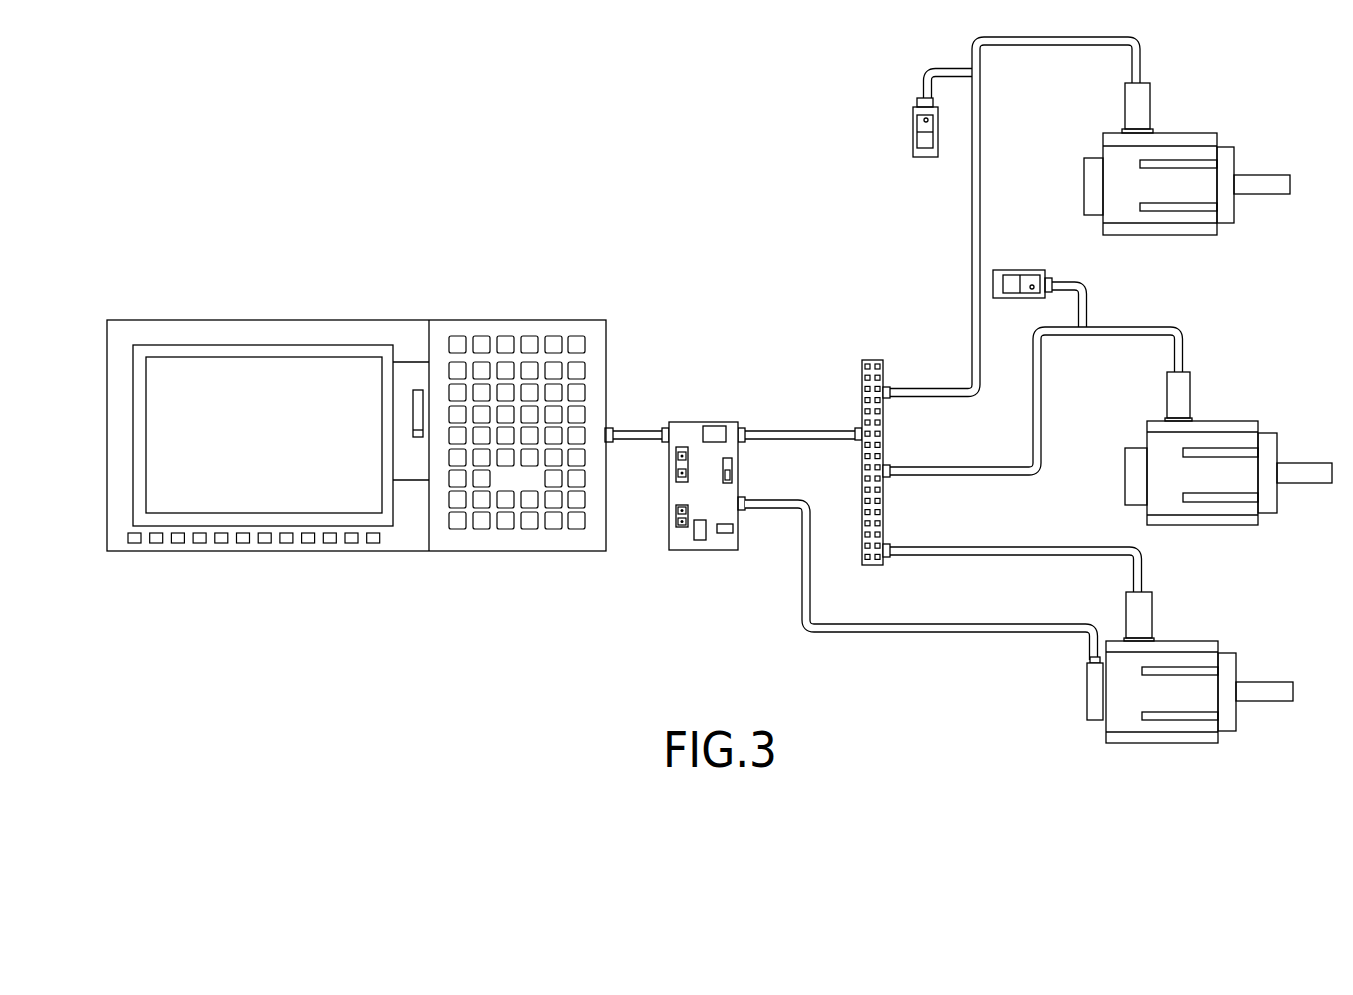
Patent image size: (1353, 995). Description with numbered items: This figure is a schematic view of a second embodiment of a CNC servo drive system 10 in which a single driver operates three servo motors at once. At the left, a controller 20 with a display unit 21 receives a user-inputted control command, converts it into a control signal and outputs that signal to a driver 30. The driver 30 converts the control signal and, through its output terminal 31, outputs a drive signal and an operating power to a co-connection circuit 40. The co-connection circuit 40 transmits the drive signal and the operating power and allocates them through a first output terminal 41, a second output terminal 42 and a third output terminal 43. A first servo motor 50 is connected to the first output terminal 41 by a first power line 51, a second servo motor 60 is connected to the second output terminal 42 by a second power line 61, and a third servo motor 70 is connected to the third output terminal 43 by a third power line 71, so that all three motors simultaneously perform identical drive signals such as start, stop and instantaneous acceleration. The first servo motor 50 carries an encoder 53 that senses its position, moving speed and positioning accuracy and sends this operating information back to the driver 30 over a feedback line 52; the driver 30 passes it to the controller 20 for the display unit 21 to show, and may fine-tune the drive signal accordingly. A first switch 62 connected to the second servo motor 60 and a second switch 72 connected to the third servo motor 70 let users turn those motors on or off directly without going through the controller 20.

The CNC servo drive system 10 is at (527, 181).
The controller 20 is at (433, 320).
The display unit 21 is at (325, 382).
The driver 30 is at (684, 416).
The output terminal 31 is at (742, 427).
The co-connection circuit 40 is at (859, 358).
The first output terminal 41 is at (887, 545).
The second output terminal 42 is at (887, 467).
The third output terminal 43 is at (887, 388).
The first servo motor 50 is at (1226, 641).
The first power line 51 is at (1140, 570).
The feedback line 52 is at (925, 628).
The encoder 53 is at (1090, 655).
The second servo motor 60 is at (1203, 407).
The second power line 61 is at (1105, 330).
The first switch 62 is at (1010, 283).
The third servo motor 70 is at (1163, 115).
The third power line 71 is at (975, 243).
The second switch 72 is at (912, 137).